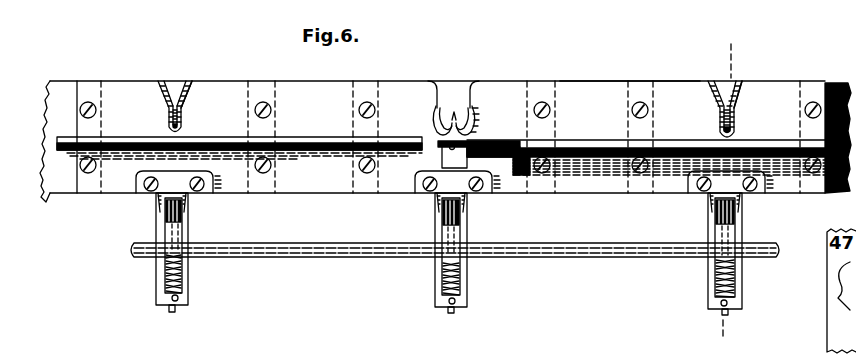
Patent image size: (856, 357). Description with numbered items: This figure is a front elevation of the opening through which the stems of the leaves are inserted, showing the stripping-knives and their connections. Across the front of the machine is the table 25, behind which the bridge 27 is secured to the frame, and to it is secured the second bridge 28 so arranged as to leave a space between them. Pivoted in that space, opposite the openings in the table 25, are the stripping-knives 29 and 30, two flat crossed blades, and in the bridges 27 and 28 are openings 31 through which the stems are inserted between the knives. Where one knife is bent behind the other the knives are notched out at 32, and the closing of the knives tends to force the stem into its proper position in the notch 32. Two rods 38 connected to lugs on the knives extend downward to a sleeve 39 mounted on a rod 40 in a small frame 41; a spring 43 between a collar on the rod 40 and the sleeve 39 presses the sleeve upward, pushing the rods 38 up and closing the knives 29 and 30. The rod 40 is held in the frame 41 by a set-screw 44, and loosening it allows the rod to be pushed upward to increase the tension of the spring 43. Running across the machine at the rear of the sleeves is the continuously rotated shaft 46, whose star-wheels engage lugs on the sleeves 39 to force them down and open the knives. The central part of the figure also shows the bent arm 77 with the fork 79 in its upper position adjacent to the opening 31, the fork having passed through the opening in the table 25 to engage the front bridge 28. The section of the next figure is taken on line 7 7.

The section line 7 7 is at (727, 191).
The table 25 is at (335, 136).
The bridge 27 is at (58, 183).
The second bridge 28 is at (592, 83).
The stripping-knife 29 is at (167, 83).
The stripping-knife 30 is at (186, 83).
The opening 31 is at (452, 96).
The notch 32 is at (181, 122).
The rod 38 is at (156, 200).
The sleeve 39 is at (177, 238).
The rod 40 is at (182, 205).
The small frame 41 is at (190, 232).
The spring 43 is at (182, 268).
The set-screw 44 is at (178, 301).
The shaft 46 is at (591, 262).
The bent arm 77 is at (467, 157).
The fork 79 is at (441, 127).